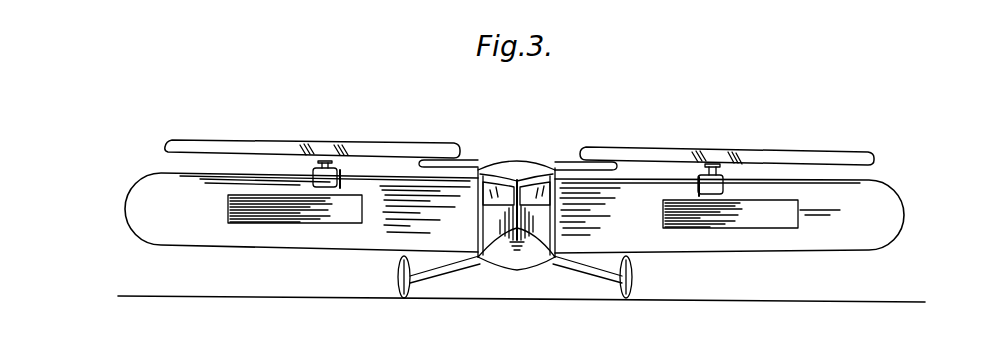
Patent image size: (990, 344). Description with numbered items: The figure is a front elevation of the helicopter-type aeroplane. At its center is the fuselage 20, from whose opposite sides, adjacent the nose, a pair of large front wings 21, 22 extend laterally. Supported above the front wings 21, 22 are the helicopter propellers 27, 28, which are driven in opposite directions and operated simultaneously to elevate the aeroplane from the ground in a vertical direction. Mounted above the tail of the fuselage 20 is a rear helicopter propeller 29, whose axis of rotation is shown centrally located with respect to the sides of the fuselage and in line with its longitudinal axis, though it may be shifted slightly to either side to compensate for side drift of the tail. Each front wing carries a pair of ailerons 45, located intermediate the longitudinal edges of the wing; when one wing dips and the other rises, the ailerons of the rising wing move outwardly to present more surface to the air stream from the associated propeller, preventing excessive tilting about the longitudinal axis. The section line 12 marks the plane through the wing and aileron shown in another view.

The section line 12- 12 is at (348, 168).
The fuselage 20 is at (545, 216).
The front wing 21 is at (247, 240).
The front wing 22 is at (813, 243).
The helicopter propeller 27 is at (282, 145).
The helicopter propeller 28 is at (783, 152).
The rear helicopter propeller 29 is at (560, 162).
The aileron 45 is at (333, 209).